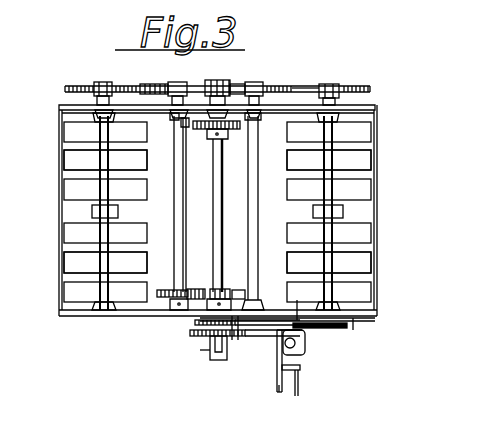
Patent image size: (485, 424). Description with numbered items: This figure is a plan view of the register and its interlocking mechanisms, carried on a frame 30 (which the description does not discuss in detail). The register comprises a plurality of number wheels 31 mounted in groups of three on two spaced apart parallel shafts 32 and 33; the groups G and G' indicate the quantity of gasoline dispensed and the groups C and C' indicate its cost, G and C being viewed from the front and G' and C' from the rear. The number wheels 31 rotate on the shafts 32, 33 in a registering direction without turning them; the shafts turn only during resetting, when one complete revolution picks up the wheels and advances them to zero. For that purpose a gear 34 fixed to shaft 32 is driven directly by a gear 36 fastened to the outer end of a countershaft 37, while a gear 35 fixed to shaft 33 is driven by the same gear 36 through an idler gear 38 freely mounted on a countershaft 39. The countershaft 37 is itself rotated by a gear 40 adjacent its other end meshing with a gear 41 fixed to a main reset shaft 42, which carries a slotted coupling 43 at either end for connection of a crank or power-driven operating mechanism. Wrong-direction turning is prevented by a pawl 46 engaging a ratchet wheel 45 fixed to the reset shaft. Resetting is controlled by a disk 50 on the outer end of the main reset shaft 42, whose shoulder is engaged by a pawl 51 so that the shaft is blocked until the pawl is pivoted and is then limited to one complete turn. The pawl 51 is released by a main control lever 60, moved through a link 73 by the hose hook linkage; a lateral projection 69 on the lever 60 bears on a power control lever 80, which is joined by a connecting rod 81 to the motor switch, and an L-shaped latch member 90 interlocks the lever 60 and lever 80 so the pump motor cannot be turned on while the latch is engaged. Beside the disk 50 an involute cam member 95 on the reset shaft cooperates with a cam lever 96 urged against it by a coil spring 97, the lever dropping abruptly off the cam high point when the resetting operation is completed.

The frame 30 is at (77, 318).
The number wheels 31 is at (72, 199).
The shaft 32 is at (94, 100).
The shaft 33 is at (336, 99).
The gear 34 is at (90, 85).
The gear 35 is at (312, 86).
The gear 36 is at (152, 84).
The countershaft 37 is at (175, 186).
The idler gear 38 is at (275, 84).
The countershaft 39 is at (250, 218).
The gear 40 is at (185, 290).
The gear 41 is at (226, 290).
The main reset shaft 42 is at (220, 200).
The slotted coupling 43 is at (208, 82).
The ratchet wheel 45 is at (232, 130).
The pawl 46 is at (189, 128).
The disk 50 is at (190, 334).
The pawl 51 is at (233, 352).
The main control lever 60 is at (277, 360).
The lateral projection 69 is at (282, 396).
The link 73 is at (277, 386).
The power control lever 80 is at (300, 368).
The connecting rod 81 is at (299, 381).
The L-shaped latch member 90 is at (305, 343).
The involute cam member 95 is at (195, 323).
The cam lever 96 is at (296, 321).
The coil spring 97 is at (347, 326).
The group of number wheels G is at (90, 155).
The group of number wheels C is at (90, 262).
The group of number wheels G' is at (342, 262).
The group of number wheels C' is at (342, 157).